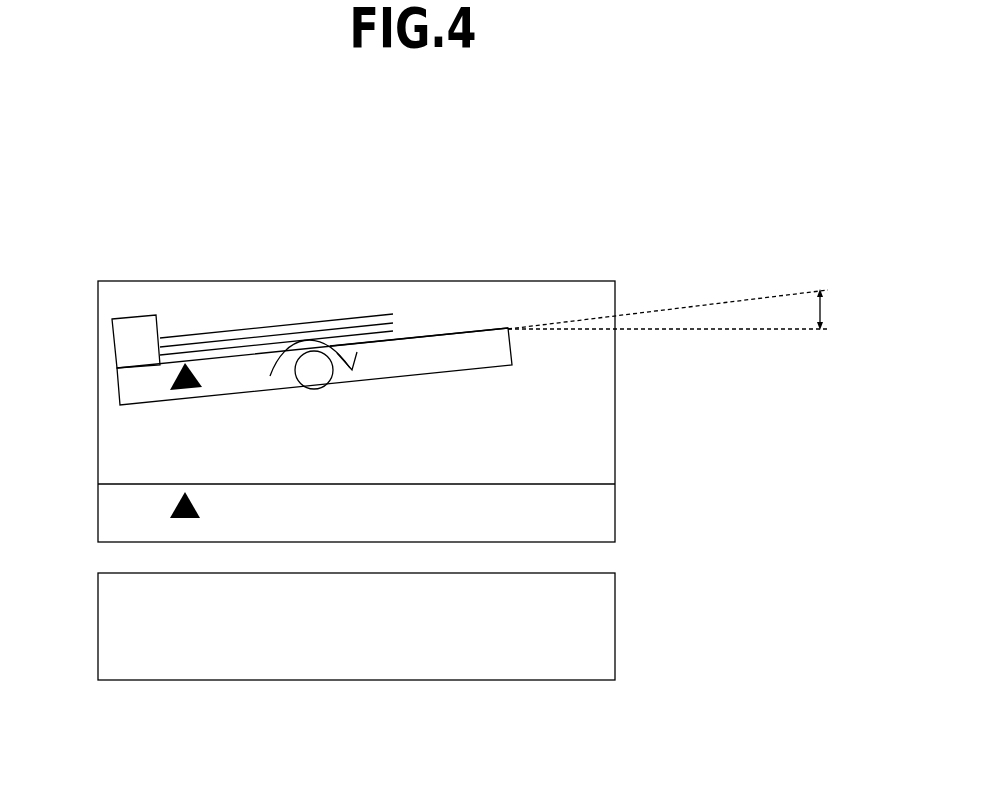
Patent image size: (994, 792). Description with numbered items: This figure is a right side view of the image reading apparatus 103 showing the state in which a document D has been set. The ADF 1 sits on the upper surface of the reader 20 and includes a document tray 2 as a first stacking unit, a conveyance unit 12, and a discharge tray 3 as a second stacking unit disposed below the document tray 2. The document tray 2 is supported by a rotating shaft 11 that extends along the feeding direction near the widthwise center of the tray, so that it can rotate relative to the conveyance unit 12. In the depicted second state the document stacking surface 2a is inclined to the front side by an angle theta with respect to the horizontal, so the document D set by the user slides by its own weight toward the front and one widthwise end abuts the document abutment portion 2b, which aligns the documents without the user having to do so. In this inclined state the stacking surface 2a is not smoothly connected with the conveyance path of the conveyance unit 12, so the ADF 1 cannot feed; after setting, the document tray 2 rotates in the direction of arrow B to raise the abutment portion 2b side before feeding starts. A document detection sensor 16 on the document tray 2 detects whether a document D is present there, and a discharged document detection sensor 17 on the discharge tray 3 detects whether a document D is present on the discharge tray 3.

The image reading apparatus 103 is at (398, 186).
The ADF 1 is at (160, 258).
The conveyance unit 12 is at (567, 281).
The discharge tray 3 is at (263, 518).
The reader 20 is at (438, 682).
The document tray 2 is at (482, 328).
The document stacking surface 2a is at (427, 337).
The document abutment portion 2b is at (113, 350).
The document D is at (335, 322).
The arrow B is at (271, 376).
The rotating shaft 11 is at (317, 390).
The document detection sensor 16 is at (183, 389).
The discharged document detection sensor 17 is at (172, 505).